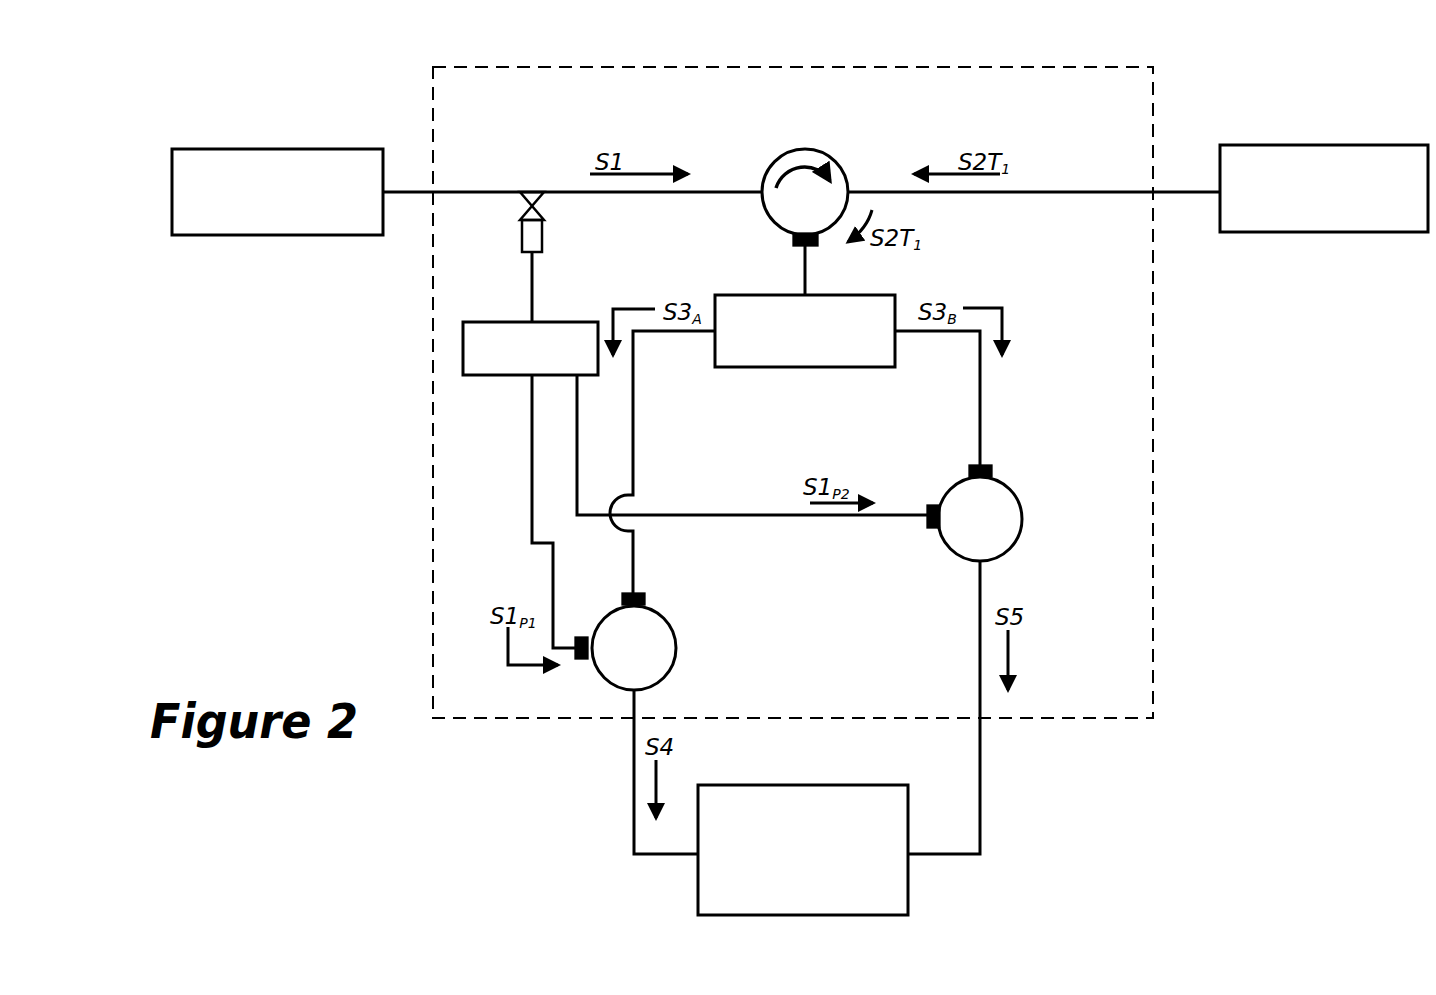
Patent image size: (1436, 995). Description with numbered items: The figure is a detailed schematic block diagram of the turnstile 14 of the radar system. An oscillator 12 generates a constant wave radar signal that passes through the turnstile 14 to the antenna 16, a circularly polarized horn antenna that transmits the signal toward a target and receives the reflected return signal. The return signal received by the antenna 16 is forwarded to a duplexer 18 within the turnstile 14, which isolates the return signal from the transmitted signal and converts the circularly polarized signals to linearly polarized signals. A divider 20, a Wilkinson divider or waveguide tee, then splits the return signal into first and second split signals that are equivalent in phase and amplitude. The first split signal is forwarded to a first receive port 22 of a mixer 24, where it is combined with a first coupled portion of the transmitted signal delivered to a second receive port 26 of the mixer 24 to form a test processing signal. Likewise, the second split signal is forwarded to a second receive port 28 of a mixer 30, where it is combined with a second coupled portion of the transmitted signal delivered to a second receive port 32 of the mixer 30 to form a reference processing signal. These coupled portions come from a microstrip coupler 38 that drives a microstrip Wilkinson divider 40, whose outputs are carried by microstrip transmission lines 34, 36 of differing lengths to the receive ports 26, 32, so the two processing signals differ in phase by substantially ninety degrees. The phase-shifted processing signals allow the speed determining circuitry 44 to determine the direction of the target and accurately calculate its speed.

The oscillator 12 is at (313, 149).
The turnstile 14 is at (812, 67).
The antenna 16 is at (1265, 145).
The duplexer 18 is at (801, 153).
The divider 20 is at (890, 295).
The first receive port 22 is at (648, 600).
The mixer 24 is at (678, 647).
The second receive port 26 is at (583, 660).
The second receive port 28 is at (983, 465).
The mixer 30 is at (1021, 546).
The second receive port 32 is at (932, 530).
The microstrip transmission line 34 is at (552, 562).
The microstrip transmission line 36 is at (742, 515).
The microstrip coupler 38 is at (519, 240).
The microstrip Wilkinson divider 40 is at (557, 322).
The speed determining circuitry 44 is at (697, 888).